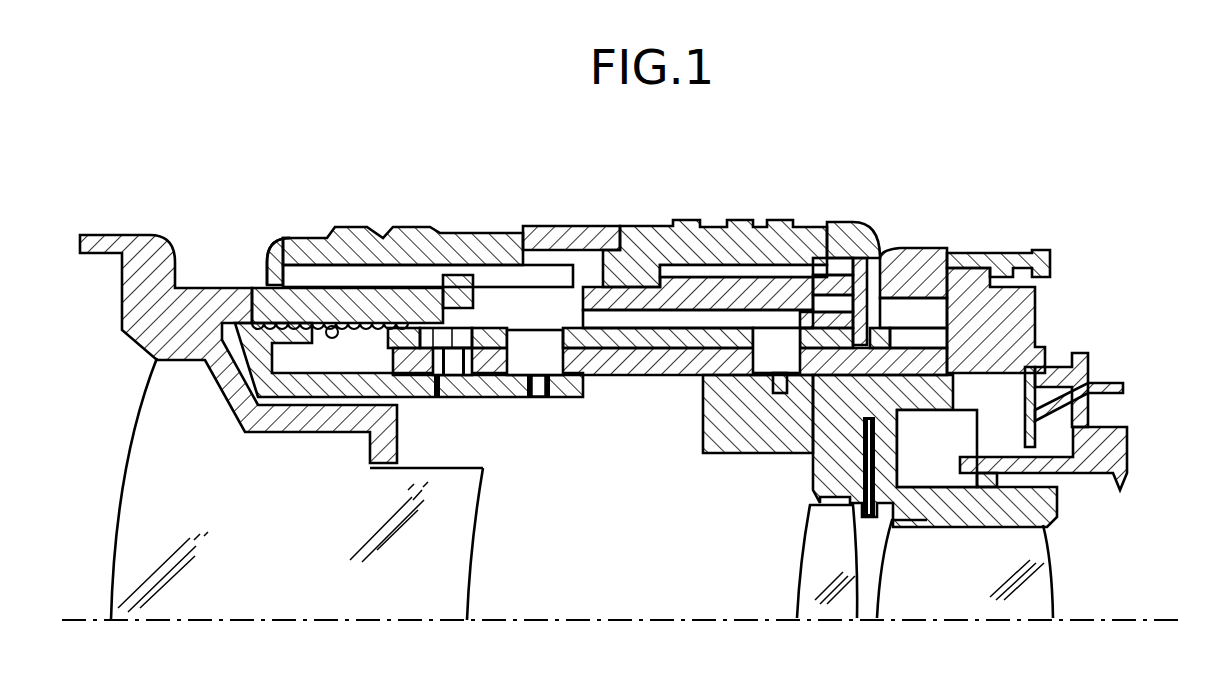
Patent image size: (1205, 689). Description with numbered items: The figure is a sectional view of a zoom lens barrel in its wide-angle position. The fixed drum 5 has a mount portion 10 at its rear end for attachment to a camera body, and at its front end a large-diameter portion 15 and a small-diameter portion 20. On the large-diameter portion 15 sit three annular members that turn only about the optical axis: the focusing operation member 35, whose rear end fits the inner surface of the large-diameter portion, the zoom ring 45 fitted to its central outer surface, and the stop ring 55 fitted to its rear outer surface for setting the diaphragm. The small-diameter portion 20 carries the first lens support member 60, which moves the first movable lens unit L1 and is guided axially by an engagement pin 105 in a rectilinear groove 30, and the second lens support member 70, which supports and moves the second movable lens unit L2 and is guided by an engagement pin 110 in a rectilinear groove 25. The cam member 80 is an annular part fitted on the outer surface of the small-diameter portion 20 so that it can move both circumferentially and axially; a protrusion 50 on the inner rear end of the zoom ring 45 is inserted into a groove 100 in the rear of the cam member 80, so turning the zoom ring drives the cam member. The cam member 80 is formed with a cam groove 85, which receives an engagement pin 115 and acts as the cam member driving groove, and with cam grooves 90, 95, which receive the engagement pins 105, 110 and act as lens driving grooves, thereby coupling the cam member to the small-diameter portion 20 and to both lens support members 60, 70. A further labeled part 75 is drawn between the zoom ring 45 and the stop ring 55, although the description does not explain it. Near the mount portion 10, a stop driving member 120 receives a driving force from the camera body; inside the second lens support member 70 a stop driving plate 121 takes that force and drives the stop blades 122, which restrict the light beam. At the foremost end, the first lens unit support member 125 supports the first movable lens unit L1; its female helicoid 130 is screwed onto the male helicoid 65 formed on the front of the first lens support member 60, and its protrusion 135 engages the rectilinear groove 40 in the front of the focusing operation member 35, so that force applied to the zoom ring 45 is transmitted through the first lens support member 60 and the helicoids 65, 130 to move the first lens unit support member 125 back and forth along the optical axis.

The fixed drum 5 is at (1030, 305).
The mount portion 10 is at (1050, 377).
The large-diameter portion 15 is at (568, 242).
The small-diameter portion 20 is at (636, 378).
The rectilinear groove 25 is at (708, 455).
The rectilinear groove 30 is at (548, 368).
The focusing operation member 35 is at (410, 250).
The rectilinear groove 40 is at (378, 270).
The zoom ring 45 is at (705, 250).
The protrusion 50 is at (862, 258).
The stop ring 55 is at (985, 252).
The first lens support member 60 is at (487, 387).
The male helicoid 65 is at (252, 328).
The second lens support member 70 is at (745, 455).
The lever 75 is at (915, 335).
The cam member 80 is at (680, 348).
The cam groove 85 is at (490, 332).
The cam groove 90 is at (560, 400).
The cam groove 95 is at (748, 310).
The groove 100 is at (815, 285).
The engagement pin 105 is at (528, 398).
The engagement pin 110 is at (780, 375).
The engagement pin 115 is at (437, 395).
The stop driving member 120 is at (1090, 432).
The stop driving plate 121 is at (895, 440).
The stop blades 122 is at (860, 505).
The first lens unit support member 125 is at (196, 288).
The female helicoid 130 is at (330, 326).
The protrusion 135 is at (460, 290).
The first movable lens unit L1 is at (367, 605).
The second movable lens unit L2 is at (1050, 618).